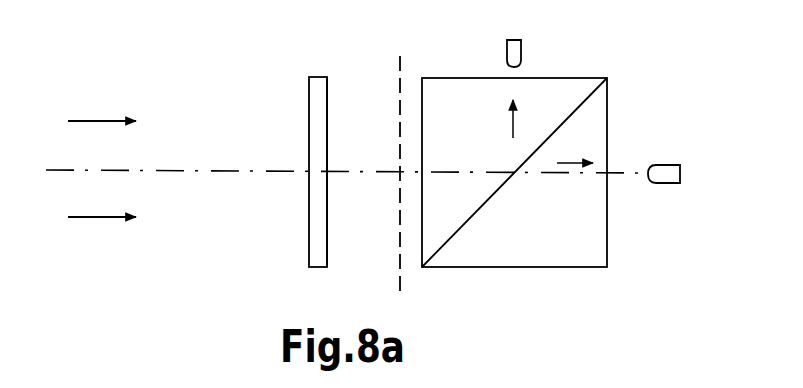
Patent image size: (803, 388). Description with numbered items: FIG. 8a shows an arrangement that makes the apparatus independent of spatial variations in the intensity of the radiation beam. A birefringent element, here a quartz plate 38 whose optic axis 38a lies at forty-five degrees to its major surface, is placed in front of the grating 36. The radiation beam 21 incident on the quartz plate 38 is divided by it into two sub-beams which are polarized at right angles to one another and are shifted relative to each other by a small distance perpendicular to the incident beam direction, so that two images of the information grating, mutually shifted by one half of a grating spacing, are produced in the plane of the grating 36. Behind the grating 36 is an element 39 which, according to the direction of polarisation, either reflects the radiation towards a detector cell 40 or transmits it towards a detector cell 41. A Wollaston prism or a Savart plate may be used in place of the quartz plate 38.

The radiation beam 21 is at (86, 123).
The quartz plate 38 is at (309, 128).
The optic axis 38a is at (324, 242).
The grating 36 is at (397, 207).
The element 39 is at (473, 217).
The detector cell 40 is at (522, 52).
The detector cell 41 is at (663, 184).